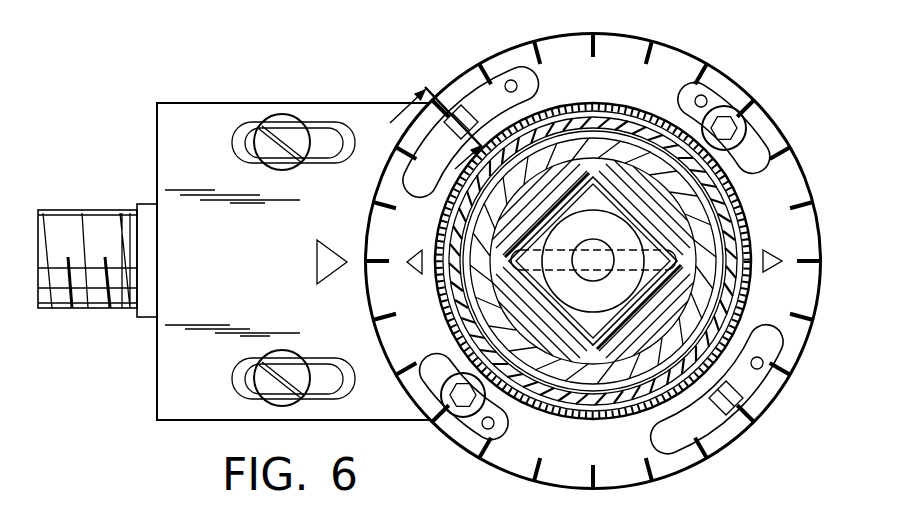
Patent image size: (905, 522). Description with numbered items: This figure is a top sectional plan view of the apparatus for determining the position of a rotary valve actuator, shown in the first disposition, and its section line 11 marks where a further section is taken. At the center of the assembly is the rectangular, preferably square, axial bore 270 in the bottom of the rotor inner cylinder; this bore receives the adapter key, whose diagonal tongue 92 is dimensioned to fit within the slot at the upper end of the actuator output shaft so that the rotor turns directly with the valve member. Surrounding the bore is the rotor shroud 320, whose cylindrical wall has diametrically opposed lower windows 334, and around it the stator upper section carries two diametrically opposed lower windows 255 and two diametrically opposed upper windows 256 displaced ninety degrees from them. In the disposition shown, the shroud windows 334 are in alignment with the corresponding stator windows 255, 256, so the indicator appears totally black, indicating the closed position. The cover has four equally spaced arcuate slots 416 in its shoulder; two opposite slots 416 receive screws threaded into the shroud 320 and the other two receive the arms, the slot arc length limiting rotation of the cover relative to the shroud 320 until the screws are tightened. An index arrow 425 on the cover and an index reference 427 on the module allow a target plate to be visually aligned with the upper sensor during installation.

The section line 11- 11 is at (456, 108).
The diagonal tongue 92 is at (700, 253).
The windows 255 is at (712, 225).
The windows 256 is at (480, 285).
The axial bore 270 is at (595, 182).
The shroud 320 is at (737, 195).
The windows 334 is at (430, 210).
The arcuate slots 416 is at (511, 80).
The index arrow 425 is at (410, 256).
The index reference 427 is at (318, 258).